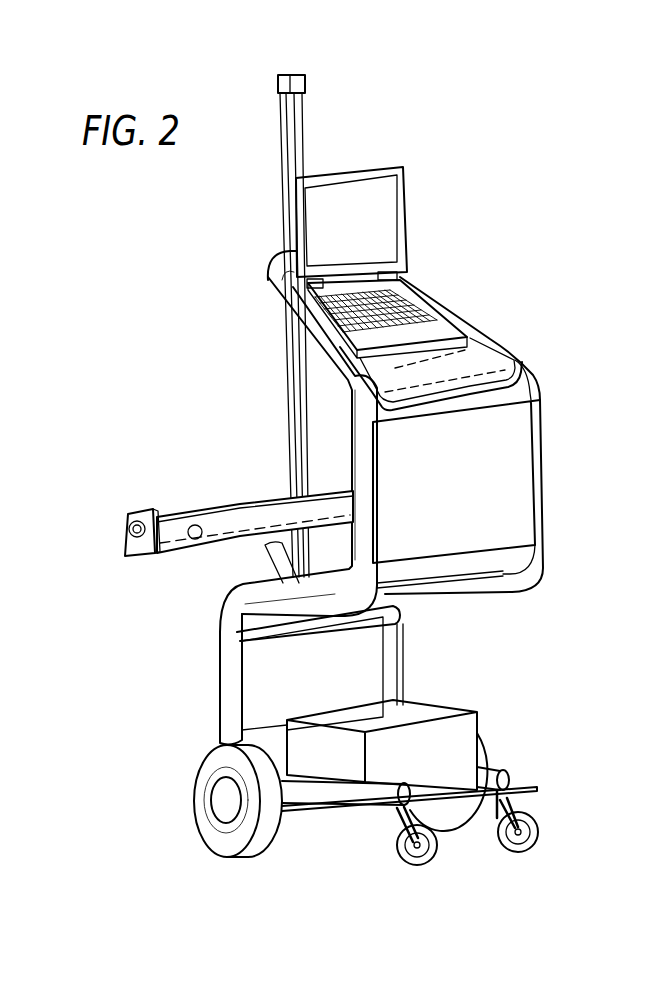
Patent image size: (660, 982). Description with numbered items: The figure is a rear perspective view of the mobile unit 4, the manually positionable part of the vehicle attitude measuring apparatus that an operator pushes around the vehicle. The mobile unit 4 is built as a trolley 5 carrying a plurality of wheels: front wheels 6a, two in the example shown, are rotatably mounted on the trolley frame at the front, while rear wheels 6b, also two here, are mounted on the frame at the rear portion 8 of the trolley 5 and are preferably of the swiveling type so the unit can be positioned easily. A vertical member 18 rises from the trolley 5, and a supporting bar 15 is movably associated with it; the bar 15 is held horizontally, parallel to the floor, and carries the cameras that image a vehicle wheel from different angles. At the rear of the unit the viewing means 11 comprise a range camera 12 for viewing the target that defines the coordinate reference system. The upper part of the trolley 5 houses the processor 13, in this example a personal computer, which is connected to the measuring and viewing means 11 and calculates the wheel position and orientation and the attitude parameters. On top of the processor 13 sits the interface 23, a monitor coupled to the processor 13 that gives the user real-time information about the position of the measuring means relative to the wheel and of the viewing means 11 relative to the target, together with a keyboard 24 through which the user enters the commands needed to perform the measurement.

The mobile unit 4 is at (556, 392).
The trolley 5 is at (227, 648).
The front wheels 6a is at (203, 768).
The rear wheels 6b is at (437, 848).
The rear portion 8 is at (505, 445).
The viewing means 11 is at (204, 495).
The range camera 12 is at (116, 526).
The processor 13 is at (437, 330).
The supporting bar 15 is at (243, 520).
The vertical member 18 is at (300, 363).
The interface 23 is at (352, 207).
The keyboard 24 is at (412, 303).